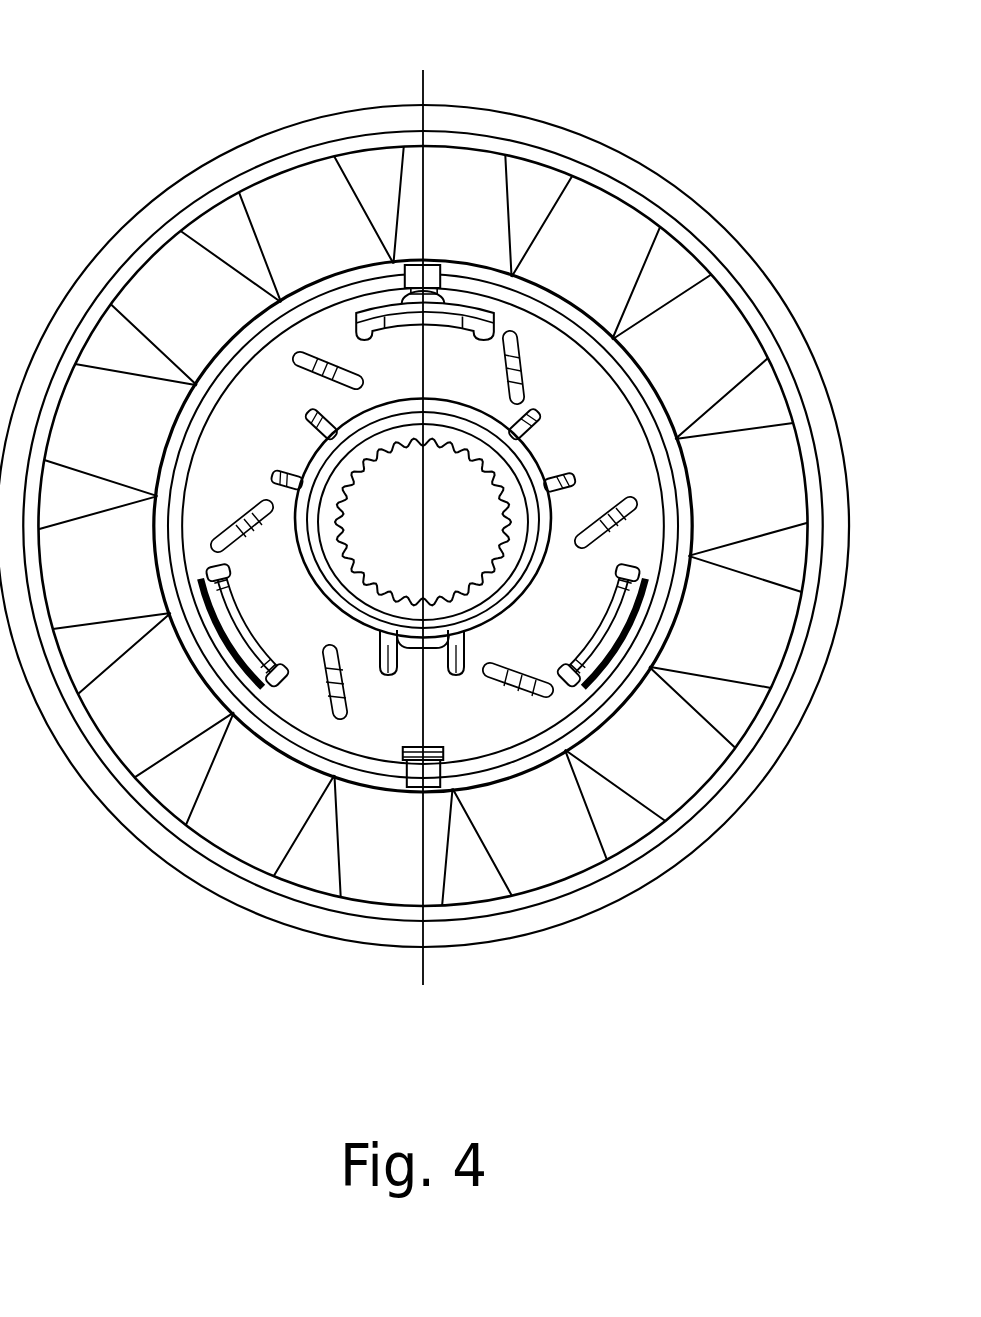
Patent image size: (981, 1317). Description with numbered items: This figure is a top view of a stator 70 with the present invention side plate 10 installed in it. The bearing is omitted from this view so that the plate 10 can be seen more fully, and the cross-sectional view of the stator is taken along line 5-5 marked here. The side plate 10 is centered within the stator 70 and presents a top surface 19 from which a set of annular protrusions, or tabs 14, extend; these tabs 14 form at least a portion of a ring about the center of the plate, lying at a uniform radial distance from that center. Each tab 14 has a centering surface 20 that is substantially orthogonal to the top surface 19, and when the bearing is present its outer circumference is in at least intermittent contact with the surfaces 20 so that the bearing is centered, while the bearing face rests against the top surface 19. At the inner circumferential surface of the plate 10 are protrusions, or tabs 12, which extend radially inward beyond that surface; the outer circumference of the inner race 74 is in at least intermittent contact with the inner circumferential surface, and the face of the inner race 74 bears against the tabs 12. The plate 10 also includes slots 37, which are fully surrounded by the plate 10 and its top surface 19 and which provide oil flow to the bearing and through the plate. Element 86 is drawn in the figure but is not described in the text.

The stator 70 is at (226, 149).
The top surface 19 is at (258, 390).
The side plate 10 is at (556, 320).
The annular protrusion 14 is at (624, 672).
The centering surface 20 is at (598, 642).
The hub ring 86 is at (388, 398).
The protrusion 12 is at (434, 658).
The inner race 74 is at (386, 442).
The slot 37 is at (345, 689).
The line 5- 5 is at (430, 70).